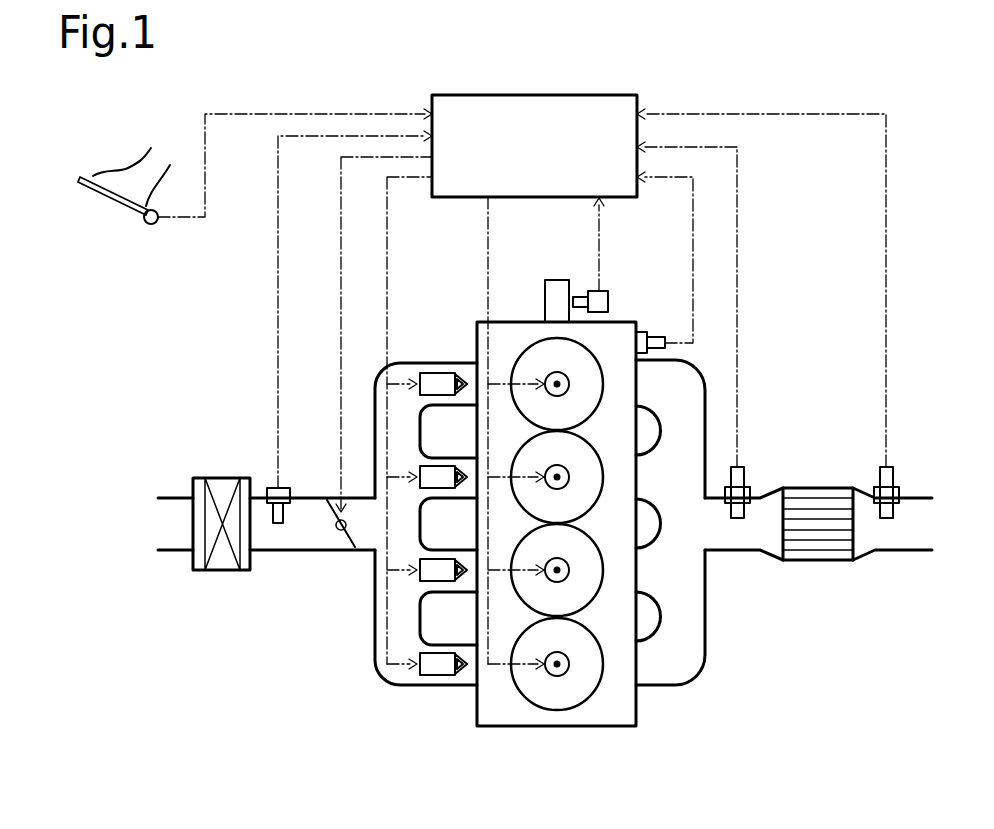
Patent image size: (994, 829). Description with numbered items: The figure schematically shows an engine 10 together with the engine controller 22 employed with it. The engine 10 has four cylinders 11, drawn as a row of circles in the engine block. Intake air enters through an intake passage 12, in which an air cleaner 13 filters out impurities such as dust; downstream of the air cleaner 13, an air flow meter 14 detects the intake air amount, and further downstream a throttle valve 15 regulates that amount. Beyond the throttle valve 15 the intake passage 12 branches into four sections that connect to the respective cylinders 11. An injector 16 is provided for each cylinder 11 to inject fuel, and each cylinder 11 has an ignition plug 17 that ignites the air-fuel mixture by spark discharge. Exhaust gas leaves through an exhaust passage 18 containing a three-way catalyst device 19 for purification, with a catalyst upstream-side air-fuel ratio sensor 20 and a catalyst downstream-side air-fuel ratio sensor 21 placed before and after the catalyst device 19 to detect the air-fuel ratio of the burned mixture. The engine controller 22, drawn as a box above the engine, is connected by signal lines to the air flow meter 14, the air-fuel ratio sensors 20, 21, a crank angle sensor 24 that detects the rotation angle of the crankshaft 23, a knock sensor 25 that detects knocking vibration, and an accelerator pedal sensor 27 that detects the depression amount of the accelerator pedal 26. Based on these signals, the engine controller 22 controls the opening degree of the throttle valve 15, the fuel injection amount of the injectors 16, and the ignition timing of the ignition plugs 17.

The engine 10 is at (426, 737).
The cylinder 11 is at (593, 441).
The intake passage 12 is at (298, 552).
The air cleaner 13 is at (225, 490).
The air flow meter 14 is at (291, 490).
The throttle valve 15 is at (346, 547).
The injector 16 is at (440, 395).
The ignition plug 17 is at (548, 466).
The exhaust passage 18 is at (747, 552).
The three-way catalyst device 19 is at (819, 488).
The catalyst upstream-side air-fuel ratio sensor 20 is at (750, 478).
The catalyst downstream-side air-fuel ratio sensor 21 is at (899, 478).
The engine controller 22 is at (456, 199).
The crankshaft 23 is at (545, 305).
The crank angle sensor 24 is at (588, 292).
The knock sensor 25 is at (660, 334).
The accelerator pedal 26 is at (80, 179).
The accelerator pedal sensor 27 is at (150, 225).